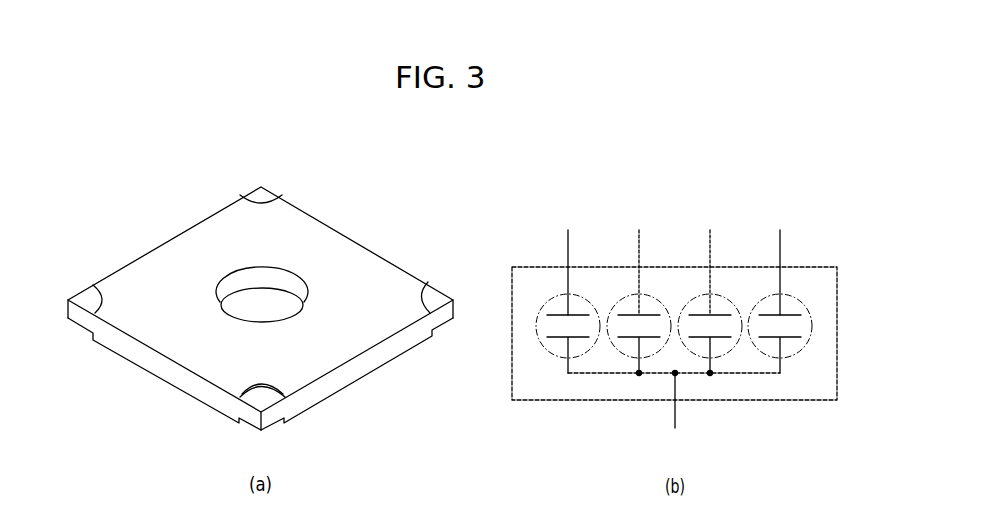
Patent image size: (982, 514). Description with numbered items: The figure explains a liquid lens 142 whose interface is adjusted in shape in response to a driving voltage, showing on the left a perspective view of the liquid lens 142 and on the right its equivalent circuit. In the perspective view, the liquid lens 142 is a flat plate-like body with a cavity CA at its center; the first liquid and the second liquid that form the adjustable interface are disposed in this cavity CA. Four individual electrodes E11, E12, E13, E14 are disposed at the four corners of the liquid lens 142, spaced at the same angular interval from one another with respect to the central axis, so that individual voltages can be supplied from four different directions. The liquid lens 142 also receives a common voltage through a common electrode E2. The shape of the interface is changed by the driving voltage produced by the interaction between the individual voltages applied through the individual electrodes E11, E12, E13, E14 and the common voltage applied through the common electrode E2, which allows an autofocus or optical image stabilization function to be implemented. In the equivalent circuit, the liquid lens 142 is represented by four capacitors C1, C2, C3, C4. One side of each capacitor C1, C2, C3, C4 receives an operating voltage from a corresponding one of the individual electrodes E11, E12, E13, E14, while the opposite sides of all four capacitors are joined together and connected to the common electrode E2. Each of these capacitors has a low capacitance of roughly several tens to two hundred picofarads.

The liquid lens 142 is at (182, 348).
The cavity CA is at (262, 298).
The individual electrode E11 is at (318, 259).
The individual electrode E12 is at (446, 332).
The individual electrode E13 is at (572, 259).
The individual electrode E14 is at (517, 238).
The common electrode E2 is at (674, 417).
The capacitor C1 is at (550, 297).
The capacitor C2 is at (625, 352).
The capacitor C3 is at (725, 297).
The capacitor C4 is at (763, 353).